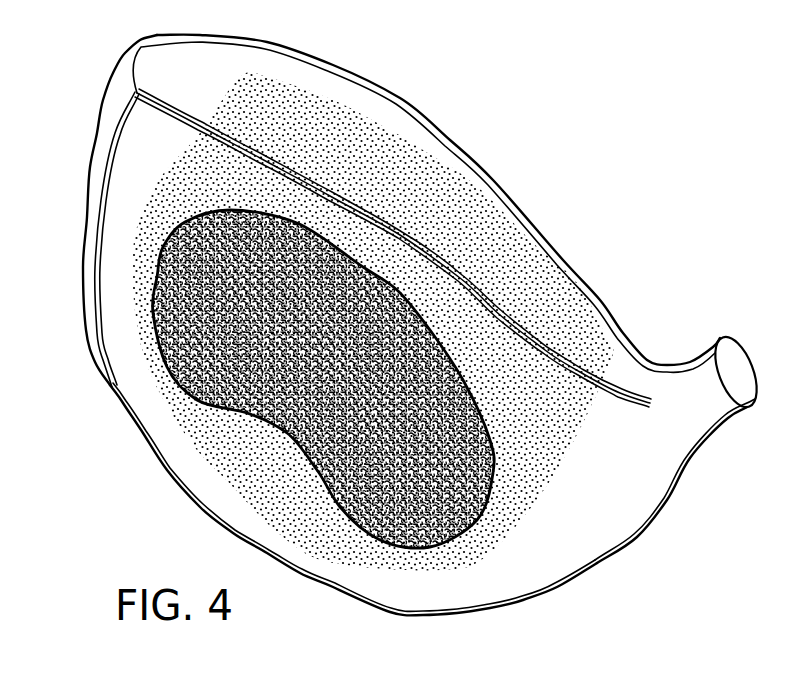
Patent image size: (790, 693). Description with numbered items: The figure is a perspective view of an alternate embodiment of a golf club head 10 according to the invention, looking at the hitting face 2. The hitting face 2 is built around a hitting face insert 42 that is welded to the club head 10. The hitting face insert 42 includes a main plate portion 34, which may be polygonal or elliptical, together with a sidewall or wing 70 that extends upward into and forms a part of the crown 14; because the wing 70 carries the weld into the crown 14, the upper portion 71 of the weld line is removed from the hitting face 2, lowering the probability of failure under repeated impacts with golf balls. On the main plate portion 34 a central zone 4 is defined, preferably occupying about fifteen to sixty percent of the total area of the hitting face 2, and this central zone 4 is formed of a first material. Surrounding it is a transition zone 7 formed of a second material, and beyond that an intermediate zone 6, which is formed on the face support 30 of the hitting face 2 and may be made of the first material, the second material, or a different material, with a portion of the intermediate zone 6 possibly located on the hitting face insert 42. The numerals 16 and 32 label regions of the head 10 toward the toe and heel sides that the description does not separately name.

The hitting face 2 is at (603, 563).
The central zone 4 is at (336, 379).
The intermediate zone 6 is at (120, 176).
The transition zone 7 is at (397, 562).
The club head 10 is at (575, 125).
The crown 14 is at (273, 55).
The toe 16 is at (88, 115).
The face support 30 is at (114, 220).
The heel 32 is at (665, 500).
The main plate portion 34 is at (524, 427).
The hitting face insert 42 is at (151, 352).
The wing 70 is at (545, 288).
The upper portion 71 is at (427, 165).